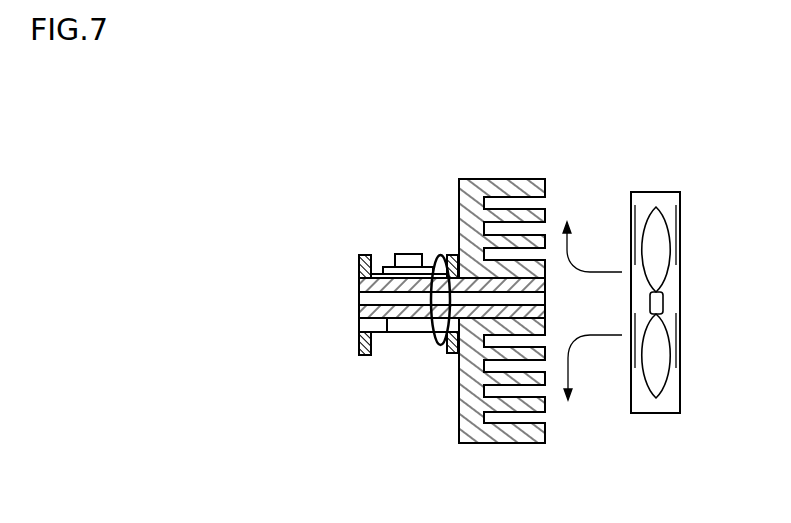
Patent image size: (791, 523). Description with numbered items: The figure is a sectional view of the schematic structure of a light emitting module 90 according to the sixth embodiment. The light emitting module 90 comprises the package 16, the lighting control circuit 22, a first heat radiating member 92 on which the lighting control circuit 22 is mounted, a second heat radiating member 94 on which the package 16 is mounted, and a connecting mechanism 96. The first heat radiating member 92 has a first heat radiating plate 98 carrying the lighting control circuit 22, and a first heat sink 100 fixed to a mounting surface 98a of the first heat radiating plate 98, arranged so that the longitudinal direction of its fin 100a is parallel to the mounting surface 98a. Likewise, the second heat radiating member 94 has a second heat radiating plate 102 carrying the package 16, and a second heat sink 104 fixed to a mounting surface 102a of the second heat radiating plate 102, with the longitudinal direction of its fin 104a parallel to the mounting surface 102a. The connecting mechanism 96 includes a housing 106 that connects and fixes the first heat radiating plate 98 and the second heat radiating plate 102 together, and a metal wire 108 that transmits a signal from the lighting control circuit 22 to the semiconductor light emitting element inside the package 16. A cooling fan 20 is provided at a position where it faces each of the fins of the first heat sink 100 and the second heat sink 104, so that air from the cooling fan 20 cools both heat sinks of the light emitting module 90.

The light emitting module 90 is at (341, 145).
The second heat radiating member 94 is at (441, 218).
The connecting mechanism 96 is at (426, 235).
The package 16 is at (400, 238).
The mounting surface 102a is at (383, 268).
The housing 106 is at (359, 262).
The second heat radiating plate 102 is at (359, 284).
The first heat radiating plate 98 is at (359, 311).
The mounting surface 98a is at (387, 325).
The lighting control circuit 22 is at (400, 325).
The metal wire 108 is at (437, 348).
The first heat radiating member 92 is at (445, 407).
The second heat sink 104 is at (512, 179).
The fin 104a is at (547, 213).
The first heat sink 100 is at (507, 443).
The fin 100a is at (547, 405).
The cooling fan 20 is at (670, 415).